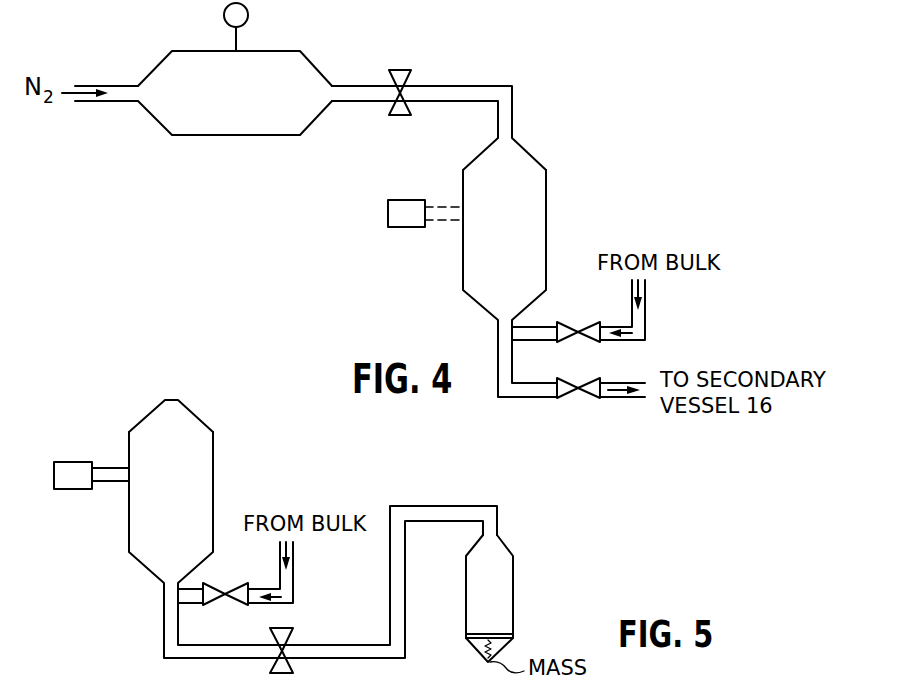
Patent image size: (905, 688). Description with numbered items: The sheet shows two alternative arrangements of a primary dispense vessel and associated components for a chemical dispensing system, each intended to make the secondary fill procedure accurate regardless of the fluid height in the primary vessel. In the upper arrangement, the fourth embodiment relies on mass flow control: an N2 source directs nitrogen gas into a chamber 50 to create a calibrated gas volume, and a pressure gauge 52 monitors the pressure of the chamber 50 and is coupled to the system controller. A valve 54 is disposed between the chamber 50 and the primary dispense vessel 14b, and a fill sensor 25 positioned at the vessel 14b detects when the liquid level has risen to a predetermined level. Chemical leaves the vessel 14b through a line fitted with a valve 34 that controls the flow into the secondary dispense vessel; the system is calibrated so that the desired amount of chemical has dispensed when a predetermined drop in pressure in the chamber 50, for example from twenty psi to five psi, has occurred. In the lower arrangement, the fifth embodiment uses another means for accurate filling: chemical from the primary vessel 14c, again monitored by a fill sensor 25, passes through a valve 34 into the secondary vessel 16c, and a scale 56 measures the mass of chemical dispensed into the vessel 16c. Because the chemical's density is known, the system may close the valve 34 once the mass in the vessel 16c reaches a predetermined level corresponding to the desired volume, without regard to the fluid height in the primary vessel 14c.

In FIG. 4, the chamber 50 is at (240, 135).
In FIG. 4, the pressure gauge 52 is at (248, 15).
In FIG. 4, the valve 54 is at (396, 115).
In FIG. 4, the primary dispense vessel 14b is at (538, 226).
In FIG. 4, the fill sensor 25 is at (405, 228).
In FIG. 5, the fill sensor 25 is at (71, 489).
In FIG. 4, the valve 34 is at (571, 376).
In FIG. 5, the valve 34 is at (288, 638).
In FIG. 5, the primary vessel 14c is at (205, 487).
In FIG. 5, the secondary vessel 16c is at (500, 568).
In FIG. 5, the scale 56 is at (512, 633).